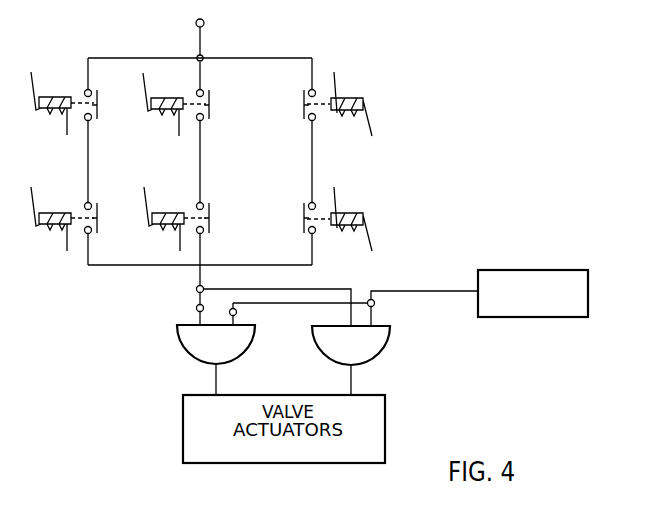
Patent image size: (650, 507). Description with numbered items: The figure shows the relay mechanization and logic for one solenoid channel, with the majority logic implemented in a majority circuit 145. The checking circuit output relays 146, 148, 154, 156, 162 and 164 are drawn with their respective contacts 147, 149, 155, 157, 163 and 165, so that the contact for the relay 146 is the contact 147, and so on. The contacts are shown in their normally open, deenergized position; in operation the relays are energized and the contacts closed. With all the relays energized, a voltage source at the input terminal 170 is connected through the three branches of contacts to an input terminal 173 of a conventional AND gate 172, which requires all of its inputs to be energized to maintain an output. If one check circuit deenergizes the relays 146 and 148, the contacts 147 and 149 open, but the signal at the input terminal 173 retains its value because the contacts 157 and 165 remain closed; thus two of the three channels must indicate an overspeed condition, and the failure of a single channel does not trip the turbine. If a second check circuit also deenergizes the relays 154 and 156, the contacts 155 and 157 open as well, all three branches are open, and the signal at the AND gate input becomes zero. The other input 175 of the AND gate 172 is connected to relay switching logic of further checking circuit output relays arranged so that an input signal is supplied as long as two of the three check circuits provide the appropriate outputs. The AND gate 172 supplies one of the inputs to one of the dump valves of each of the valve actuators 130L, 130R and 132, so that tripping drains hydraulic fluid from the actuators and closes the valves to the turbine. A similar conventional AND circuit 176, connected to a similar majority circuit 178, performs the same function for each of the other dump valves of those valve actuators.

The majority circuit 145 is at (128, 41).
The input terminal 170 is at (203, 20).
The checking circuit output relay 146 is at (44, 96).
The relay contact 147 is at (101, 107).
The checking circuit output relay 148 is at (151, 97).
The relay contact 149 is at (215, 102).
The checking circuit output relay 156 is at (349, 98).
The relay contact 157 is at (303, 107).
The checking circuit output relay 154 is at (42, 213).
The relay contact 155 is at (101, 223).
The checking circuit output relay 162 is at (155, 213).
The relay contact 163 is at (210, 219).
The checking circuit output relay 164 is at (346, 213).
The relay contact 165 is at (302, 227).
The AND gate 172 is at (178, 339).
The input terminal of AND gate 173 is at (196, 308).
The other input of AND gate 175 is at (237, 312).
The AND circuit 176 is at (389, 333).
The majority circuit 178 is at (563, 317).
The valve actuator 130R is at (209, 449).
The valve actuator 130L is at (288, 449).
The valve actuator 132 is at (357, 449).